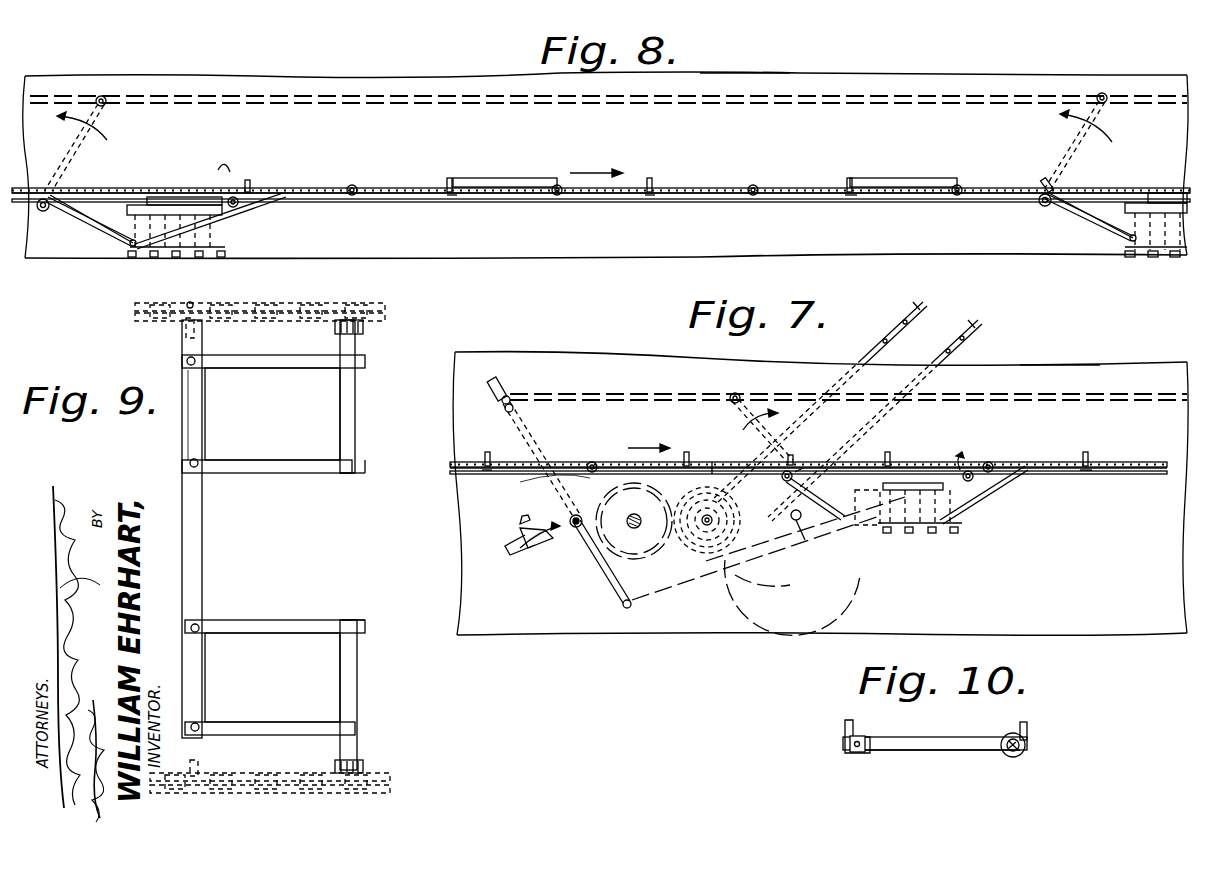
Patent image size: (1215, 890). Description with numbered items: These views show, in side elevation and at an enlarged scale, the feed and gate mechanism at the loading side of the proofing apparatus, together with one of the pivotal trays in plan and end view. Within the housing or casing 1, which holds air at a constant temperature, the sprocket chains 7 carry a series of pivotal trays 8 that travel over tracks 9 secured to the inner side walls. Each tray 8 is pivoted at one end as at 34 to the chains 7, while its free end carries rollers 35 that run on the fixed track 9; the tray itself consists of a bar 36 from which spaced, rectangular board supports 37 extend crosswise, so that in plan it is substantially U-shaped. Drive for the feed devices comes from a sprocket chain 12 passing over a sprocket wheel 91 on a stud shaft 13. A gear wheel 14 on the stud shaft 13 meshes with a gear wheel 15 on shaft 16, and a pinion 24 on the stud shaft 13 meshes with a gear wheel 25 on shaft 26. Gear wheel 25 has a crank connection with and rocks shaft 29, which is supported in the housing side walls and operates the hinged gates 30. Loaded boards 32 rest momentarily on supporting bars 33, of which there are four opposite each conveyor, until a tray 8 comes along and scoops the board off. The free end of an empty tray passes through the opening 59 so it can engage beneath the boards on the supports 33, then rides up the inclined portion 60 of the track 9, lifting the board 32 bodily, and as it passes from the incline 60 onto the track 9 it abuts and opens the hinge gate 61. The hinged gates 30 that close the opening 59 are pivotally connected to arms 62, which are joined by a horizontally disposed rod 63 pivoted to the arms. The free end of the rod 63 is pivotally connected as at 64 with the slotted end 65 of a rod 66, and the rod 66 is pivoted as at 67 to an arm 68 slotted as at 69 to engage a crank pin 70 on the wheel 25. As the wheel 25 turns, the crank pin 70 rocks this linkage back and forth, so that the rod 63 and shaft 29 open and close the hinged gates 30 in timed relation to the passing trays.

In FIG. 8, the housing or casing 1 is at (745, 76).
In FIG. 7, the housing or casing 1 is at (1055, 378).
In FIG. 8, the sprocket chains 7 is at (380, 188).
In FIG. 9, the sprocket chains 7 is at (280, 304).
In FIG. 7, the sprocket chains 7 is at (470, 462).
In FIG. 8, the pivotal trays 8 is at (292, 189).
In FIG. 9, the pivotal trays 8 is at (220, 444).
In FIG. 7, the pivotal trays 8 is at (530, 470).
In FIG. 10, the pivotal trays 8 is at (935, 767).
In FIG. 8, the tracks 9 is at (560, 200).
In FIG. 7, the tracks 9 is at (1110, 474).
In FIG. 7, the sprocket chain 12 is at (897, 328).
In FIG. 7, the stud shaft 13 is at (700, 530).
In FIG. 7, the gear wheel 14 is at (714, 470).
In FIG. 7, the gear wheel 15 is at (645, 556).
In FIG. 7, the shaft 16 is at (635, 518).
In FIG. 7, the pinion 24 is at (790, 518).
In FIG. 7, the gear wheel 25 is at (838, 582).
In FIG. 7, the shaft 26 is at (820, 540).
In FIG. 7, the shaft 29 is at (574, 528).
In FIG. 8, the hinged gates 30 is at (72, 220).
In FIG. 7, the hinged gates 30 is at (815, 494).
In FIG. 8, the boards 32 is at (188, 200).
In FIG. 8, the supporting bars 33 is at (170, 240).
In FIG. 7, the supporting bars 33 is at (922, 532).
In FIG. 8, the pivot 34 is at (452, 196).
In FIG. 9, the pivot 34 is at (192, 306).
In FIG. 7, the pivot 34 is at (480, 470).
In FIG. 8, the rollers 35 is at (352, 196).
In FIG. 9, the rollers 35 is at (360, 326).
In FIG. 7, the rollers 35 is at (590, 462).
In FIG. 10, the rollers 35 is at (1020, 752).
In FIG. 8, the bar 36 is at (449, 178).
In FIG. 9, the bar 36 is at (200, 566).
In FIG. 7, the bar 36 is at (480, 458).
In FIG. 10, the bar 36 is at (845, 740).
In FIG. 9, the board supports 37 is at (320, 464).
In FIG. 10, the board supports 37 is at (932, 738).
In FIG. 8, the opening 59 is at (100, 205).
In FIG. 8, the inclined portion 60 is at (250, 222).
In FIG. 7, the inclined portion 60 is at (985, 500).
In FIG. 8, the hinge gate 61 is at (256, 196).
In FIG. 7, the hinge gate 61 is at (990, 480).
In FIG. 8, the arms 62 is at (78, 128).
In FIG. 7, the arms 62 is at (738, 394).
In FIG. 8, the rod 63 is at (612, 104).
In FIG. 7, the rod 63 is at (848, 382).
In FIG. 7, the pivotal connection 64 is at (512, 398).
In FIG. 7, the slotted end 65 is at (500, 380).
In FIG. 7, the rod 66 is at (600, 568).
In FIG. 7, the pivotal connection 67 is at (620, 606).
In FIG. 7, the arm 68 is at (765, 570).
In FIG. 8, the slot 69 is at (232, 247).
In FIG. 7, the slot 69 is at (960, 526).
In FIG. 7, the crank pin 70 is at (945, 532).
In FIG. 7, the sprocket wheel 91 is at (705, 525).